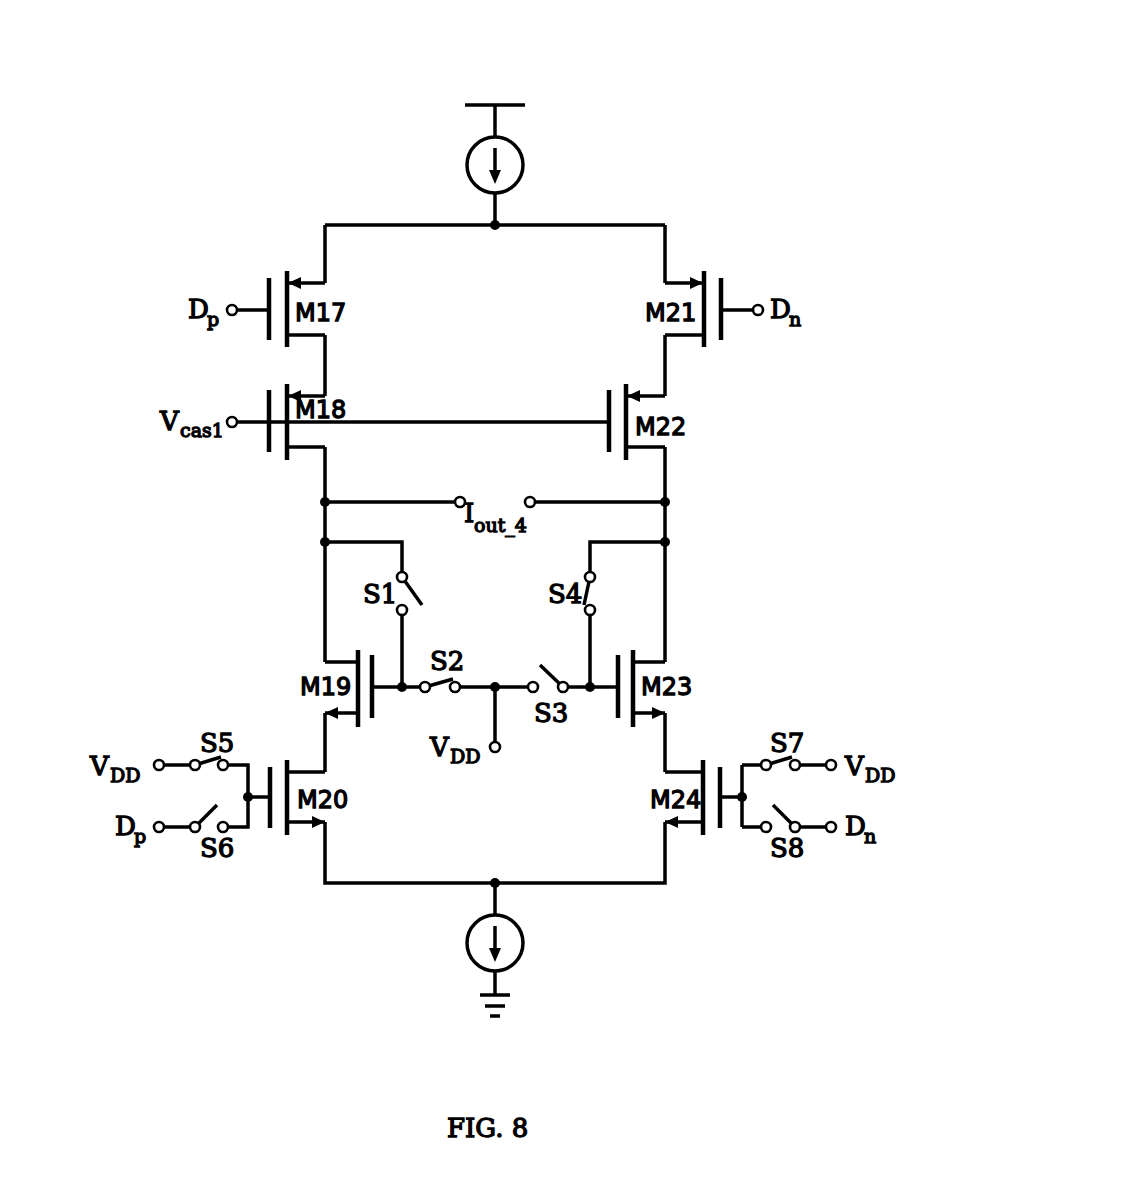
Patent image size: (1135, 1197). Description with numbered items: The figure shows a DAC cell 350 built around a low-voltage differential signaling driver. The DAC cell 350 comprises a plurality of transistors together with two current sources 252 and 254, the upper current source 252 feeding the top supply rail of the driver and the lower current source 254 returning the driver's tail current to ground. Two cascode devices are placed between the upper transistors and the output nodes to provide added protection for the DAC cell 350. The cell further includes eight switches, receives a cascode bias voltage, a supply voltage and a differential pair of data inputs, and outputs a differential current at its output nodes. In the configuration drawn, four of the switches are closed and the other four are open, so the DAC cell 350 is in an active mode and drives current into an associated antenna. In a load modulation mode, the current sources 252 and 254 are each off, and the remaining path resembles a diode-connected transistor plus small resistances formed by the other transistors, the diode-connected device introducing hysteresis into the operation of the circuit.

The current source 252 is at (523, 165).
The current source 254 is at (523, 943).
The DAC cell 350 is at (722, 78).